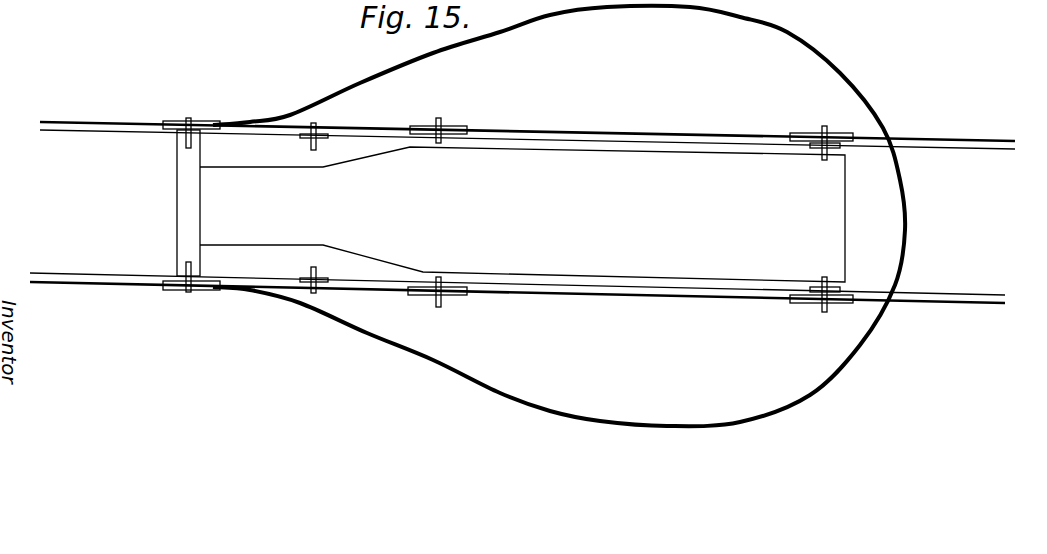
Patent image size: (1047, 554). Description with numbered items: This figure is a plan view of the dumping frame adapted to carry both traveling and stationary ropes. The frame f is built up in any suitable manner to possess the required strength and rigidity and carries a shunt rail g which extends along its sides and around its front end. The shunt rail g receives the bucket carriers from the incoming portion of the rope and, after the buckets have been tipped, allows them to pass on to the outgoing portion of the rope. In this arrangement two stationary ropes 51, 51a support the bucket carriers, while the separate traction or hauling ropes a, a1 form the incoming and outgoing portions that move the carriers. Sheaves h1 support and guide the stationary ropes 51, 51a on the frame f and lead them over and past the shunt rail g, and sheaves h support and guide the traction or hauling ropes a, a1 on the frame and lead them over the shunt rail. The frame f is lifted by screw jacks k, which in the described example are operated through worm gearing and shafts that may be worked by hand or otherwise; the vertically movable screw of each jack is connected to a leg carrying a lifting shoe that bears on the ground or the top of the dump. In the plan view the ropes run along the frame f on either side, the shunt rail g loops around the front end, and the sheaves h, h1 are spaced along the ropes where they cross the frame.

The stationary rope 51 is at (87, 125).
The stationary rope 51a is at (115, 281).
The traction or hauling rope a is at (95, 132).
The traction or hauling rope a1 is at (73, 275).
The frame f is at (511, 206).
The shunt rail g is at (787, 33).
The sheave h is at (182, 133).
The sheave h1 is at (214, 124).
The screw jack k is at (307, 139).